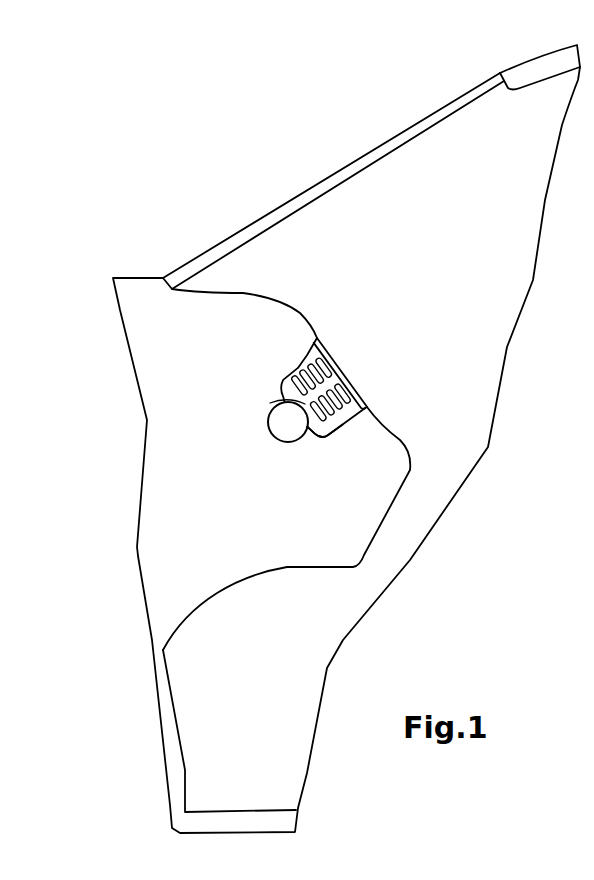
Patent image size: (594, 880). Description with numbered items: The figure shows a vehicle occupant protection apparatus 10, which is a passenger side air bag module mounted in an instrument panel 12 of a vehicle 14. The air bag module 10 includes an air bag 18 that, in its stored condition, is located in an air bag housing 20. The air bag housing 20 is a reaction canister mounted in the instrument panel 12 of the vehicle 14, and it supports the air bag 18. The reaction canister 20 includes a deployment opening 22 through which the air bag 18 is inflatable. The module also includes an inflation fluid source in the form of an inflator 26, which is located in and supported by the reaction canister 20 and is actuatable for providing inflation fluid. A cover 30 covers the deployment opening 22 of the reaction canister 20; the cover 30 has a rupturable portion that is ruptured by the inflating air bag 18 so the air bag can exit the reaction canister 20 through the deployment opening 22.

The vehicle occupant protection apparatus 10 is at (385, 305).
The instrument panel 12 is at (258, 312).
The vehicle 14 is at (165, 803).
The air bag 18 is at (300, 368).
The air bag housing 20 is at (348, 425).
The deployment opening 22 is at (372, 414).
The inflator 26 is at (282, 422).
The cover 30 is at (362, 370).